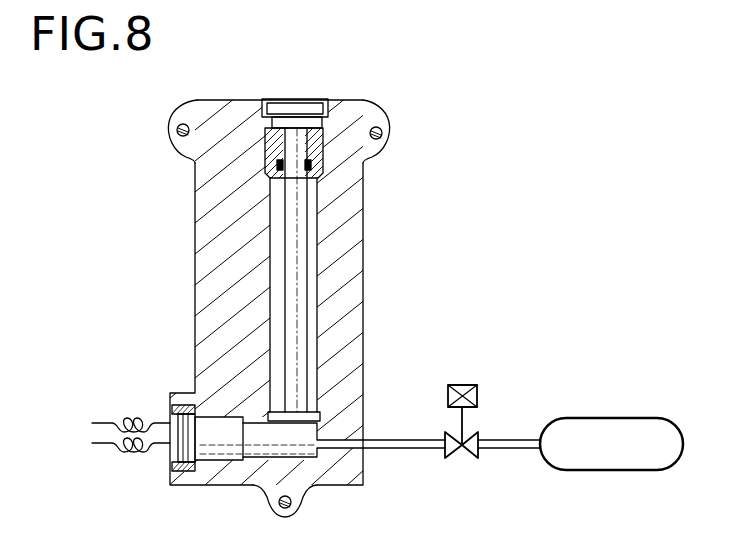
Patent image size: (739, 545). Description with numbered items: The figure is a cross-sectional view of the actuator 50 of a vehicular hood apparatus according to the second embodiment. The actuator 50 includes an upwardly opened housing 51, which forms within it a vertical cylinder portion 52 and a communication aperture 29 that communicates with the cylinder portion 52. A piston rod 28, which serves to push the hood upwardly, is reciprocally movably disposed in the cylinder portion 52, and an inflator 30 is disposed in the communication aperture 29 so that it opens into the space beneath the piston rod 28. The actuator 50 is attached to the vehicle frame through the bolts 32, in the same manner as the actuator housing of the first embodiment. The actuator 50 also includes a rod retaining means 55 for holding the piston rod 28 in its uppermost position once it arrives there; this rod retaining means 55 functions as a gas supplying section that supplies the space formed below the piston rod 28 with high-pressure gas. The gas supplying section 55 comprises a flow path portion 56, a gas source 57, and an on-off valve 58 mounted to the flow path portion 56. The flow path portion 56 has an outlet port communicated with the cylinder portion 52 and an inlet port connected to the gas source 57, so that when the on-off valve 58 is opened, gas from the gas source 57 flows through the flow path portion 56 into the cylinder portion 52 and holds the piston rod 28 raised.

The piston rod 28 is at (283, 313).
The communication aperture 29 is at (260, 418).
The inflator 30 is at (228, 462).
The bolts 32 is at (170, 127).
The actuator 50 is at (345, 100).
The housing 51 is at (195, 197).
The cylinder portion 52 is at (285, 245).
The rod retaining means 55 is at (624, 303).
The flow path portion 56 is at (388, 440).
The gas source 57 is at (592, 418).
The on-off valve 58 is at (464, 437).